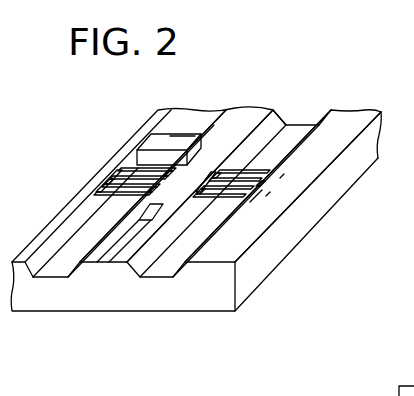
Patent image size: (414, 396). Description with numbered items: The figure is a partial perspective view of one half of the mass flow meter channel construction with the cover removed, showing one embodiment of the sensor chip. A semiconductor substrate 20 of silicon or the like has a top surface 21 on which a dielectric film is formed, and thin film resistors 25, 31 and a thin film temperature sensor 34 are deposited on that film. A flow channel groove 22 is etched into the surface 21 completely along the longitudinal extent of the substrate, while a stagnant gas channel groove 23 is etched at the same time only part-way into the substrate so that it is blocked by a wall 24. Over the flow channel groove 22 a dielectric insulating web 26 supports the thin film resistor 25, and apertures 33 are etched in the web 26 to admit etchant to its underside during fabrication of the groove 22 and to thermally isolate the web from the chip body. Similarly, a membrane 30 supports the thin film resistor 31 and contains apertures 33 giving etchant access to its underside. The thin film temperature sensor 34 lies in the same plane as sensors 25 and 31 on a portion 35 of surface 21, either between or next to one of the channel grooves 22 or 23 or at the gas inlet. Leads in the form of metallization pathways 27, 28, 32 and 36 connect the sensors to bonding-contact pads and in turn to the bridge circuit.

The semiconductor substrate 20 is at (371, 137).
The top surface 21 is at (240, 246).
The flow channel groove 22 is at (163, 270).
The stagnant gas channel groove 23 is at (58, 270).
The wall 24 is at (187, 143).
The thin film resistor 25 is at (250, 202).
The web 26 is at (289, 126).
The metallization pathway 27 is at (270, 192).
The metallization pathway 28 is at (280, 178).
The membrane 30 is at (107, 180).
The thin film resistor 31 is at (143, 167).
The metallization pathway 32 is at (226, 110).
The apertures 33 is at (207, 181).
The thin film temperature sensor 34 is at (139, 212).
The portion 35 is at (119, 240).
The metallization pathway 36 is at (118, 268).